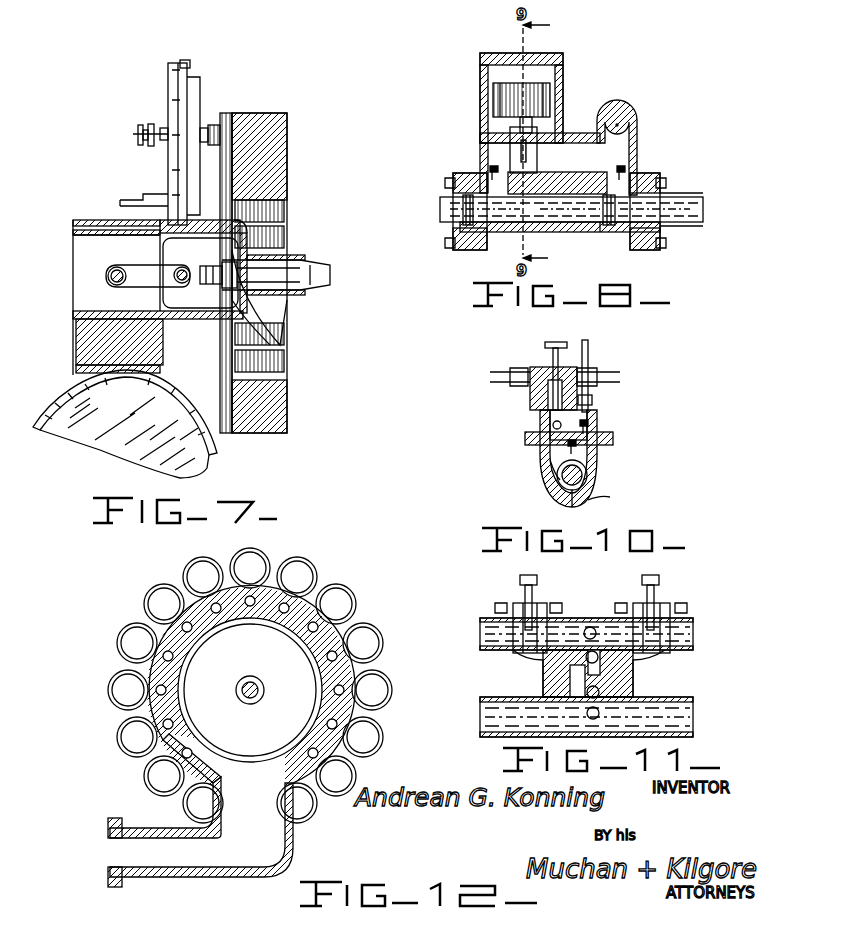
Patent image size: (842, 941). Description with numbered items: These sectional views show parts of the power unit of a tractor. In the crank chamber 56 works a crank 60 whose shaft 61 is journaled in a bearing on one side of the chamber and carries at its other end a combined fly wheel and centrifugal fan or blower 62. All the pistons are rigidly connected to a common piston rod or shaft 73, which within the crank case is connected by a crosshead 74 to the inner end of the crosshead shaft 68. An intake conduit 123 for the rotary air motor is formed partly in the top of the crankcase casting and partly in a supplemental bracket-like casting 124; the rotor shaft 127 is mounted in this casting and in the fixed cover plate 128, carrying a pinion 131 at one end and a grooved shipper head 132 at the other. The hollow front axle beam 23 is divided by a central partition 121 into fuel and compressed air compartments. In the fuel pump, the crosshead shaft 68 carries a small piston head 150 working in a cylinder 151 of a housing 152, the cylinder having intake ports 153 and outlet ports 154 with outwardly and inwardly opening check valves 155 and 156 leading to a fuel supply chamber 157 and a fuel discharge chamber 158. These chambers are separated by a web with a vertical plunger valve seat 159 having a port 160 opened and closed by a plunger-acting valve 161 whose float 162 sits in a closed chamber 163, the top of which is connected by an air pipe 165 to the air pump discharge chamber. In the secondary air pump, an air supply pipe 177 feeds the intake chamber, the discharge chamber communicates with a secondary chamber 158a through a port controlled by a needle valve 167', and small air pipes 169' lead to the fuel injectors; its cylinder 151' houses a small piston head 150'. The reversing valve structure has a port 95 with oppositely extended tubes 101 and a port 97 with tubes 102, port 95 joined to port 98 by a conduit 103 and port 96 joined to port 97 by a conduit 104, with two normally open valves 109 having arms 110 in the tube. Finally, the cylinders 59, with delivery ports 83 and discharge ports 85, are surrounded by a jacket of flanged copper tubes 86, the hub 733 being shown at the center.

In FIG. 7, the crank chamber 56 is at (100, 236).
In FIG. 7, the intake conduit 123 is at (95, 222).
In FIG. 7, the supplemental bracket-like casting 124 is at (182, 98).
In FIG. 7, the fixed cover plate 128 is at (190, 112).
In FIG. 7, the grooved shipper head 132 is at (138, 127).
In FIG. 7, the shaft 127 is at (150, 142).
In FIG. 7, the pinion 131 is at (214, 124).
In FIG. 7, the combined fly wheel and centrifugal fan or blower 62 is at (272, 146).
In FIG. 7, the shaft 61 is at (290, 268).
In FIG. 7, the crank 60 is at (228, 290).
In FIG. 7, the crosshead 74 is at (147, 287).
In FIG. 7, the common piston rod or shaft 73 is at (120, 268).
In FIG. 7, the crosshead shaft 68 is at (184, 268).
In FIG. 8, the crosshead shaft 68 is at (698, 206).
In FIG. 10, the crosshead shaft 68 is at (565, 482).
In FIG. 7, the front axle beam 23 is at (45, 410).
In FIG. 7, the central partition 121 is at (65, 446).
In FIG. 8, the closed chamber 163 is at (556, 66).
In FIG. 8, the float 162 is at (552, 76).
In FIG. 8, the plunger-acting valve 161 is at (520, 122).
In FIG. 8, the housing 152 is at (636, 146).
In FIG. 8, the fuel discharge chamber 158 is at (620, 127).
In FIG. 10, the fuel discharge chamber 158 is at (548, 425).
In FIG. 8, the vertical plunger valve seat 159 is at (536, 152).
In FIG. 8, the port 160 is at (521, 156).
In FIG. 8, the outlet ports 154 is at (425, 208).
In FIG. 10, the outlet ports 154 is at (553, 468).
In FIG. 8, the check valve 156 is at (490, 175).
In FIG. 10, the check valve 156 is at (565, 448).
In FIG. 8, the cylinder 151 is at (574, 223).
In FIG. 8, the small piston head 150 is at (605, 246).
In FIG. 10, the small air pipes 169' is at (558, 364).
In FIG. 10, the secondary chamber 158a is at (545, 408).
In FIG. 10, the needle valve 167' is at (532, 365).
In FIG. 10, the air supply pipe 177 is at (590, 348).
In FIG. 10, the intake ports 153 is at (592, 455).
In FIG. 10, the air pipe 165 is at (553, 428).
In FIG. 10, the check valve 155 is at (605, 447).
In FIG. 10, the fuel supply chamber 157 is at (588, 425).
In FIG. 10, the small piston head 150' is at (587, 509).
In FIG. 10, the cylinder 151' is at (622, 502).
In FIG. 11, the tubes 101 is at (690, 630).
In FIG. 11, the valves 109 is at (547, 605).
In FIG. 11, the arms 110 is at (640, 568).
In FIG. 11, the conduit 103 is at (600, 660).
In FIG. 11, the conduit 104 is at (570, 685).
In FIG. 11, the tubes 102 is at (690, 700).
In FIG. 11, the port 95 is at (592, 626).
In FIG. 11, the port 96 is at (586, 658).
In FIG. 11, the port 98 is at (600, 690).
In FIG. 11, the port 97 is at (595, 720).
In FIG. 12, the cylinders 59 is at (345, 667).
In FIG. 12, the delivery ports 83 is at (167, 690).
In FIG. 12, the hub 733 is at (250, 678).
In FIG. 12, the flanged copper tubes 86 is at (305, 575).
In FIG. 12, the discharge ports 85 is at (248, 772).